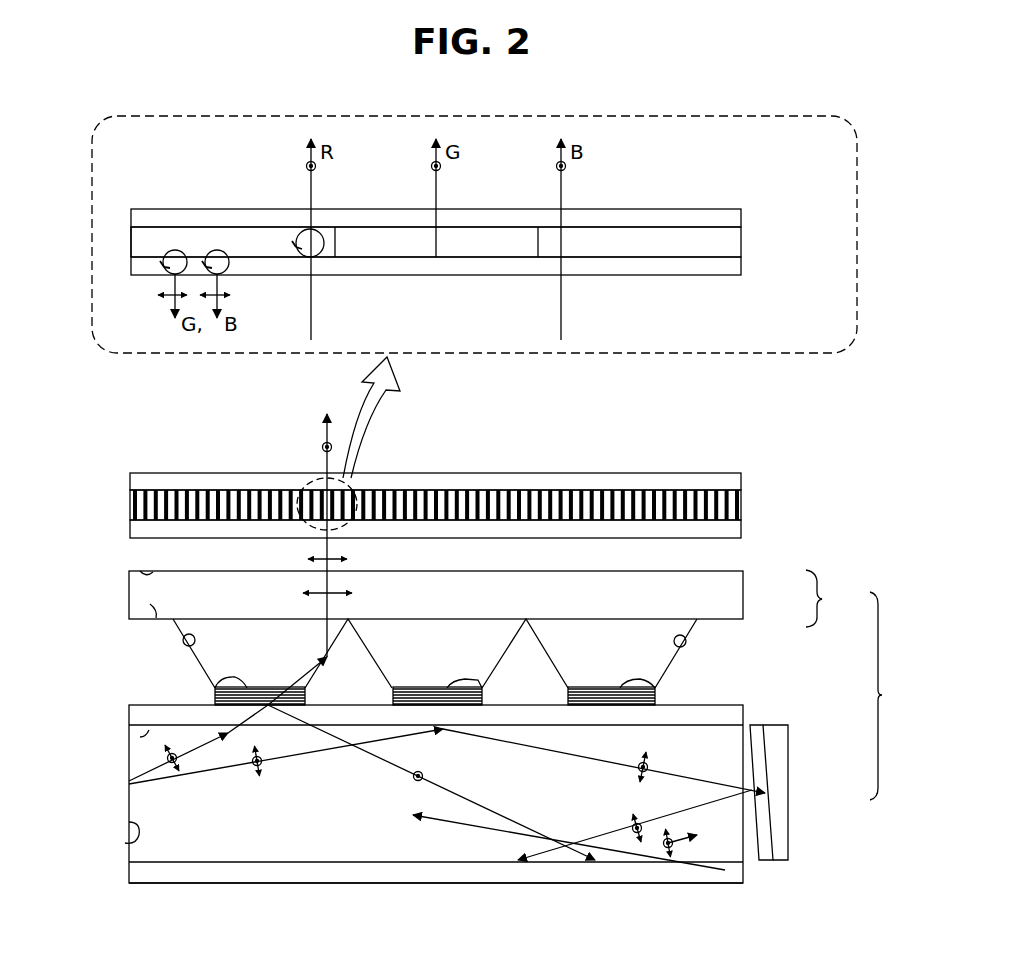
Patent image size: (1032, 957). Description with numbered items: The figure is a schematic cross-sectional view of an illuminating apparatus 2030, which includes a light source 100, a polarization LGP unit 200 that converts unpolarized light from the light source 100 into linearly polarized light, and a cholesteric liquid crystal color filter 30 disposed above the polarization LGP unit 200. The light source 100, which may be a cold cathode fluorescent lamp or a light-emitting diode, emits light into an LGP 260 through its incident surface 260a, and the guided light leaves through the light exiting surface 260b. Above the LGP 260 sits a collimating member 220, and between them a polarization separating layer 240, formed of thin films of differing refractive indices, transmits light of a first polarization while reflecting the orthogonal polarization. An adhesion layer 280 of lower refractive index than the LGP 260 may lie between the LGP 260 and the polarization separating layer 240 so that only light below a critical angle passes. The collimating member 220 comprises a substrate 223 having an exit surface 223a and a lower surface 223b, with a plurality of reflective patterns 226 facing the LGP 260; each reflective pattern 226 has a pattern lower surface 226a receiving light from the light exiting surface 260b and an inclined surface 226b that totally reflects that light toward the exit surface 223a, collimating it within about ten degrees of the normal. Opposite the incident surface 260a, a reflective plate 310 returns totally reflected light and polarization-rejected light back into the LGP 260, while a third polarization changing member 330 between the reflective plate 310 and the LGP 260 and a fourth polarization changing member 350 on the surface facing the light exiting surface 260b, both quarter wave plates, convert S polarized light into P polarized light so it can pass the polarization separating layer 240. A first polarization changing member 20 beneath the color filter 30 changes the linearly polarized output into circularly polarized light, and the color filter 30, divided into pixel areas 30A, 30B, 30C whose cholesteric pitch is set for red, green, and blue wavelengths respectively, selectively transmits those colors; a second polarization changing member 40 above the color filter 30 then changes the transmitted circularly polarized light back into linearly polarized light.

The first polarization changing member 20 is at (742, 266).
The cholesteric liquid crystal color filter 30 is at (745, 240).
The second polarization changing member 40 is at (742, 213).
The pixel area 30A is at (270, 252).
The pixel area 30B is at (393, 252).
The pixel area 30C is at (677, 252).
The illuminating apparatus 2030 is at (754, 450).
The collimating member 220 is at (836, 598).
The substrate 223 is at (727, 589).
The exit surface 223a is at (139, 570).
The lower surface of transparent plate 223b is at (150, 604).
The reflective pattern 226 is at (680, 619).
The pattern lower surface 226a is at (215, 688).
The inclined surface 226b is at (183, 642).
The polarization separating layer 240 is at (307, 697).
The adhesion layer 280 is at (723, 713).
The LGP 260 is at (722, 744).
The incident surface 260a is at (125, 843).
The light exiting surface 260b is at (140, 737).
The light source 100 is at (129, 784).
The third polarization changing member 330 is at (757, 745).
The reflective plate 310 is at (780, 761).
The fourth polarization changing member 350 is at (723, 872).
The polarization LGP unit 200 is at (896, 696).